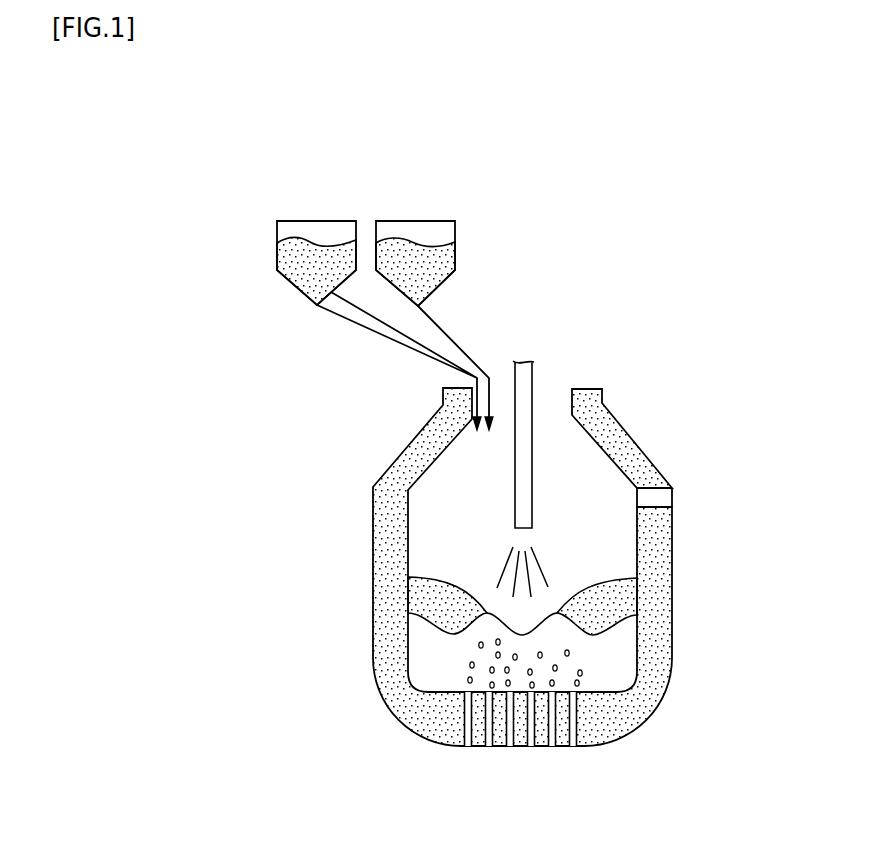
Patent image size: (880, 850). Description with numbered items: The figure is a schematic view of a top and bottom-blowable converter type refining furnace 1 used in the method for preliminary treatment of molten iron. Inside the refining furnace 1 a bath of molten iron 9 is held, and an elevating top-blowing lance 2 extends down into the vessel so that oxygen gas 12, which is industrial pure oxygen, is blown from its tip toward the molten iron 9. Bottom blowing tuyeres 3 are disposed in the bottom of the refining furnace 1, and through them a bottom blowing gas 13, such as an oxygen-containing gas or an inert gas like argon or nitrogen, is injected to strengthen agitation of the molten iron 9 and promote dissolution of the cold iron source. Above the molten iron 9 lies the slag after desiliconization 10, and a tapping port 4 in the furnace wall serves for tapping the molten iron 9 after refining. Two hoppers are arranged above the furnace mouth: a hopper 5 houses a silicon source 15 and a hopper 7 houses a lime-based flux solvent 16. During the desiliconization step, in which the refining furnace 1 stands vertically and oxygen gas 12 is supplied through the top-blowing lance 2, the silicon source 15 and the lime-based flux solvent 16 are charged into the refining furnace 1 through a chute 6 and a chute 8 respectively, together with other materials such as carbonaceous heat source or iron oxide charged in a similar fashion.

The converter type refining furnace 1 is at (659, 439).
The top-blowing lance 2 is at (532, 397).
The bottom blowing tuyeres 3 is at (492, 747).
The tapping port 4 is at (675, 497).
The hopper 5 is at (313, 220).
The chute 6 is at (380, 336).
The hopper 7 is at (418, 220).
The chute 8 is at (447, 335).
The molten iron 9 is at (607, 663).
The slag after desiliconization 10 is at (632, 594).
The oxygen gas 12 is at (553, 553).
The bottom blowing gas 13 is at (468, 665).
The silicon source 15 is at (307, 263).
The lime-based flux solvent 16 is at (440, 255).